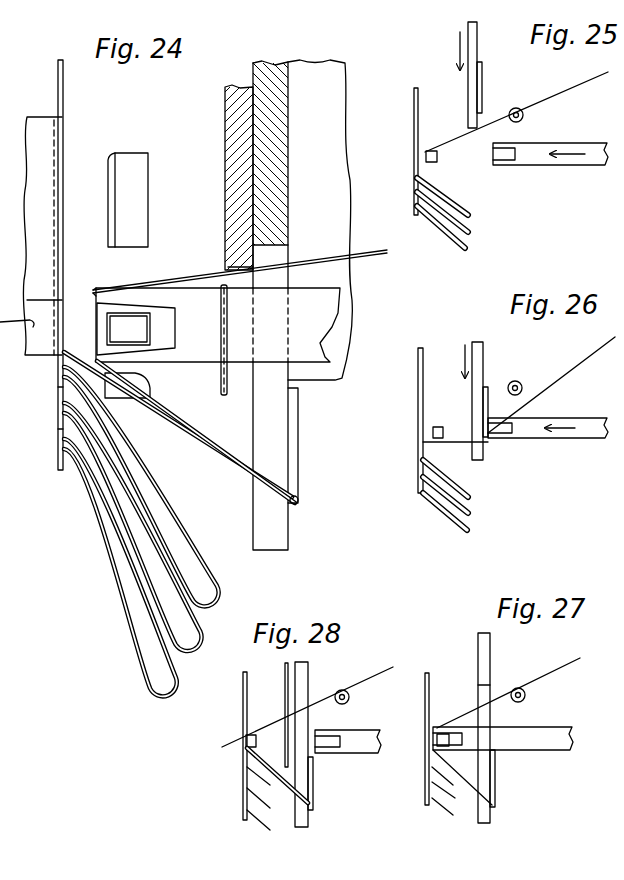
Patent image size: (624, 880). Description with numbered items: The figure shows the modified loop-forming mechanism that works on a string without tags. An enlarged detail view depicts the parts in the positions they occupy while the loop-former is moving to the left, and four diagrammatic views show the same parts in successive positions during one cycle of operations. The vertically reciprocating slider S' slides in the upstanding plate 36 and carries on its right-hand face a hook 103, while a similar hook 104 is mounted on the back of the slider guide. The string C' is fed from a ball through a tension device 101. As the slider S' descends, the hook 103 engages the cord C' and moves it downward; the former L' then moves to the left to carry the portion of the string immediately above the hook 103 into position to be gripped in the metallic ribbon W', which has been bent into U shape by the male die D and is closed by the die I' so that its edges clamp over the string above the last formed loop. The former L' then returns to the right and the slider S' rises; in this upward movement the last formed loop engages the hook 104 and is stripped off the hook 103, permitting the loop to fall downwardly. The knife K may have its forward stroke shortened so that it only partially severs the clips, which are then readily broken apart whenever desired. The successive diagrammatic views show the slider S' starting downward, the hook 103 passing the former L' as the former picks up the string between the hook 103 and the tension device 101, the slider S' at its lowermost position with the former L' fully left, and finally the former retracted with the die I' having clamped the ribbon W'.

In FIG. 24, the metallic ribbon W' is at (37, 265).
In FIG. 25, the metallic ribbon W' is at (418, 139).
In FIG. 26, the metallic ribbon W' is at (426, 406).
In FIG. 27, the metallic ribbon W' is at (436, 722).
In FIG. 28, the metallic ribbon W' is at (231, 746).
In FIG. 24, the slider S' is at (290, 275).
In FIG. 25, the slider S' is at (482, 75).
In FIG. 26, the slider S' is at (484, 397).
In FIG. 27, the slider S' is at (496, 728).
In FIG. 28, the slider S' is at (314, 741).
In FIG. 24, the upstanding plate 36 is at (233, 117).
In FIG. 24, the male die D is at (128, 200).
In FIG. 24, the female die I' is at (128, 329).
In FIG. 25, the female die I' is at (440, 160).
In FIG. 26, the female die I' is at (438, 418).
In FIG. 28, the female die I' is at (230, 740).
In FIG. 24, the former L' is at (216, 325).
In FIG. 25, the former L' is at (550, 164).
In FIG. 26, the former L' is at (548, 441).
In FIG. 27, the former L' is at (503, 722).
In FIG. 28, the former L' is at (348, 724).
In FIG. 24, the knife K is at (152, 386).
In FIG. 24, the hook 104 is at (223, 386).
In FIG. 28, the hook 104 is at (282, 725).
In FIG. 24, the string C' is at (179, 427).
In FIG. 25, the string C' is at (516, 112).
In FIG. 27, the string C' is at (508, 683).
In FIG. 24, the hook 103 is at (300, 501).
In FIG. 25, the hook 103 is at (481, 73).
In FIG. 26, the hook 103 is at (497, 387).
In FIG. 27, the hook 103 is at (497, 783).
In FIG. 28, the hook 103 is at (313, 797).
In FIG. 25, the tension device 101 is at (516, 106).
In FIG. 26, the tension device 101 is at (522, 390).
In FIG. 27, the tension device 101 is at (518, 686).
In FIG. 28, the tension device 101 is at (338, 705).